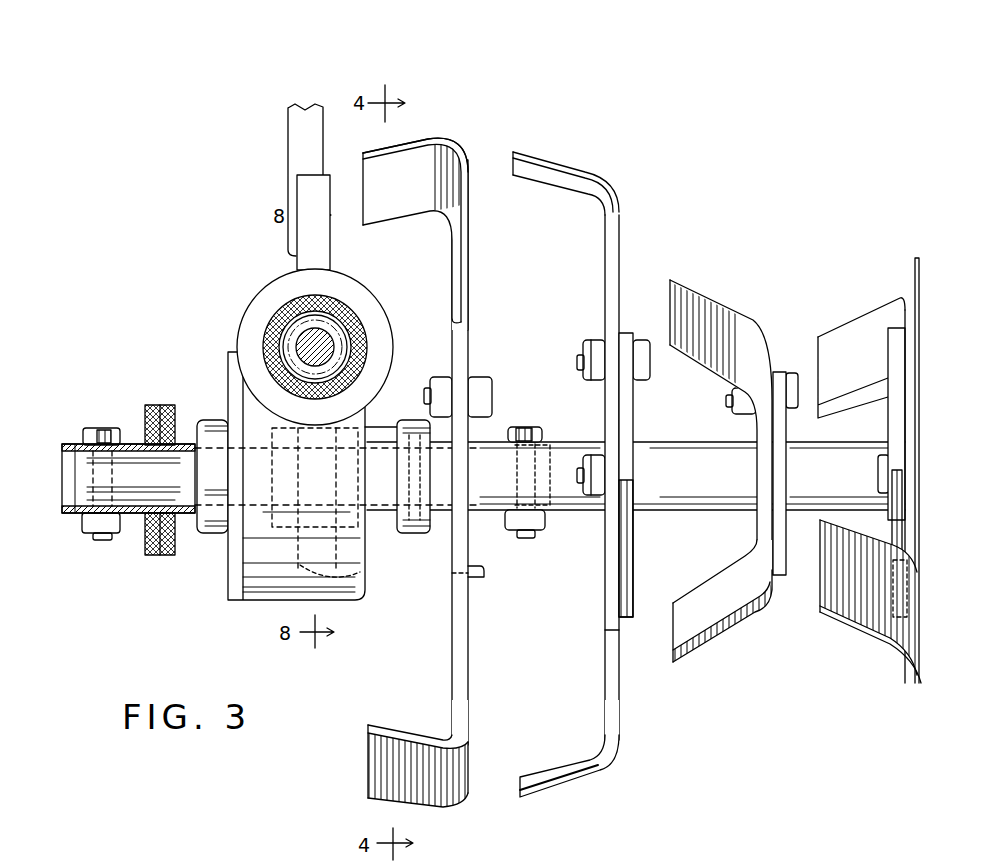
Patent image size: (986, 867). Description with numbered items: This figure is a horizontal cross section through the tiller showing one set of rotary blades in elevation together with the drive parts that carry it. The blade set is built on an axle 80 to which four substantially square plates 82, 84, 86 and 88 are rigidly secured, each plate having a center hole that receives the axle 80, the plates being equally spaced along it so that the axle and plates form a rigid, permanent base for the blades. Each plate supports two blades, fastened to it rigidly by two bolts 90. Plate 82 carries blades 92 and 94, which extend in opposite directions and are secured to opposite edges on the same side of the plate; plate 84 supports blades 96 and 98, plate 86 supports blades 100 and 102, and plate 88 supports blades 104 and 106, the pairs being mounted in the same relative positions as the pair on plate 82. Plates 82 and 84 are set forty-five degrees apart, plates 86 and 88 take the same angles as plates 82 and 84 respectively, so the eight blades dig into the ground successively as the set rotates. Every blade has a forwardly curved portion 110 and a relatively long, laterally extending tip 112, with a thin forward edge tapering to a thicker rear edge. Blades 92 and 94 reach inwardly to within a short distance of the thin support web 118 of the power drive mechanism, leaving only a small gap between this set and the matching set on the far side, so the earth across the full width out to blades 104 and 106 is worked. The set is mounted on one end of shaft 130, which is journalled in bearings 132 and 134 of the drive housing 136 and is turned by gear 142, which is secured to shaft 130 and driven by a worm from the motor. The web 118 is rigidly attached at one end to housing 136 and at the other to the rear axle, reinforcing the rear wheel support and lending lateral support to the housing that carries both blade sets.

The axle 80 is at (702, 507).
The plate 82 is at (484, 573).
The plate 84 is at (635, 578).
The plate 86 is at (781, 575).
The plate 88 is at (918, 535).
The bolts 90 is at (492, 392).
The blade 92 is at (468, 284).
The blade 94 is at (468, 668).
The blade 96 is at (610, 248).
The blade 98 is at (619, 711).
The blade 100 is at (735, 321).
The blade 102 is at (733, 627).
The blade 104 is at (868, 322).
The blade 106 is at (882, 633).
The forwardly curved portion 110 is at (468, 337).
The laterally extending tip 112 is at (418, 160).
The support web 118 is at (325, 256).
The shaft 130 is at (514, 415).
The bearing 132 is at (222, 538).
The bearing 134 is at (370, 520).
The drive housing 136 is at (360, 602).
The gear 142 is at (365, 578).